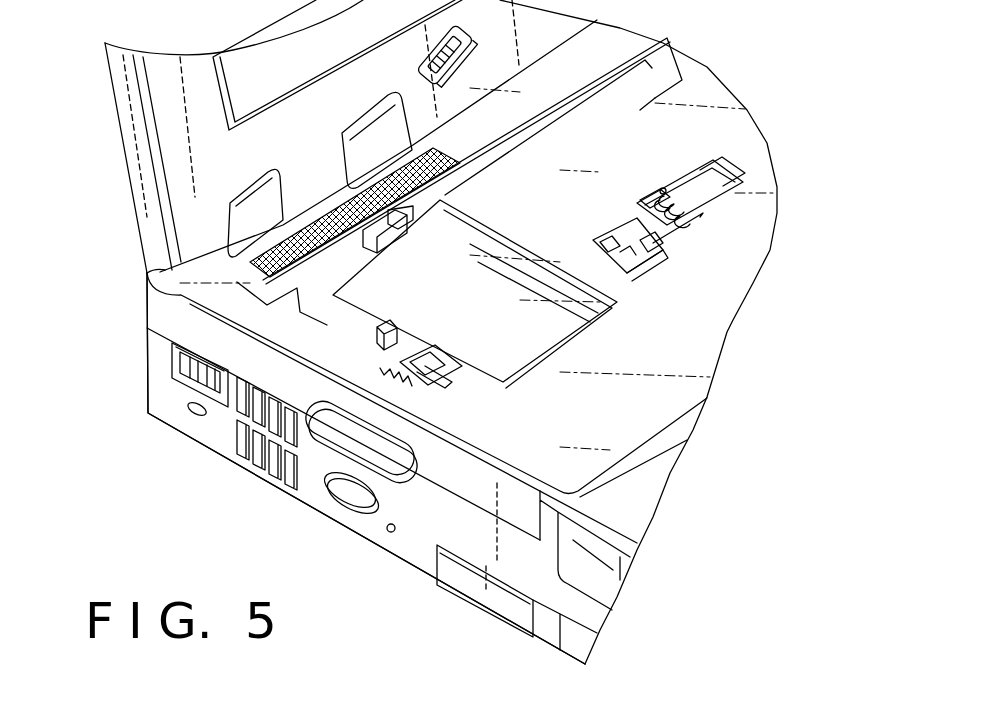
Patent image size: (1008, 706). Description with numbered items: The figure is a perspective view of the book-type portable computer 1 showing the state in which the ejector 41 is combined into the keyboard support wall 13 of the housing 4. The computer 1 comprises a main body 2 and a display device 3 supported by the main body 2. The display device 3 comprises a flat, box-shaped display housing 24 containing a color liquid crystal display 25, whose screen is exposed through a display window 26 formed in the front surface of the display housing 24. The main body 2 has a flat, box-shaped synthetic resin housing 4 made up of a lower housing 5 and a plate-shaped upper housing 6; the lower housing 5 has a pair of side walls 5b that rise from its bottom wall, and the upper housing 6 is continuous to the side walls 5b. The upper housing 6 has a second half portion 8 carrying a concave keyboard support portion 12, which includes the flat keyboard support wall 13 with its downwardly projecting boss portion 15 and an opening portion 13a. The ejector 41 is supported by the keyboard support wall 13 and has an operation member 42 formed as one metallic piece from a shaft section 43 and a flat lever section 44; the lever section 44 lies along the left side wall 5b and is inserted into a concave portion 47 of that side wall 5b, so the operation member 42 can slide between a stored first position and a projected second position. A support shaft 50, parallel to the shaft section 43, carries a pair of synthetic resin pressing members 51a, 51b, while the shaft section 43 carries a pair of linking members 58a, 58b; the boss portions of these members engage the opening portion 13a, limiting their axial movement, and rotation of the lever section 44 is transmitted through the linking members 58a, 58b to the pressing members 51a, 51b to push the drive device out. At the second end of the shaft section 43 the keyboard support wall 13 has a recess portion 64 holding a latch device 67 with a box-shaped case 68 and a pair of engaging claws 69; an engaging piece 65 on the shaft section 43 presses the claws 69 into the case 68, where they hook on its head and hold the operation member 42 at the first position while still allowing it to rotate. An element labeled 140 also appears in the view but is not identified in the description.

The portable computer 1 is at (122, 271).
The main body 2 is at (746, 300).
The display device 3 is at (117, 117).
The housing 4 is at (690, 572).
The lower housing 5 is at (593, 606).
The side wall 5b is at (420, 548).
The upper housing 6 is at (620, 535).
The second half portion 8 is at (300, 343).
The keyboard support portion 12 is at (647, 410).
The keyboard support wall 13 is at (752, 148).
The opening portion 13a is at (466, 370).
The boss portion 15 is at (388, 330).
The display housing 24 is at (183, 178).
The color liquid crystal display 25 is at (288, 52).
The display window 26 is at (252, 100).
The ejector 41 is at (503, 303).
The operation member 42 is at (316, 472).
The shaft section 43 is at (335, 385).
The lever section 44 is at (360, 500).
The concave portion 47 is at (408, 480).
The support shaft 50 is at (558, 322).
The pressing member 51a is at (442, 387).
The pressing member 51b is at (650, 258).
The linking member 58a is at (412, 343).
The linking member 58b is at (600, 237).
The recess portion 64 is at (664, 190).
The engaging piece 65 is at (656, 200).
The latch device 67 is at (736, 172).
The case 68 is at (718, 184).
The engaging claws 69 is at (660, 190).
The power switch window 140 is at (257, 335).